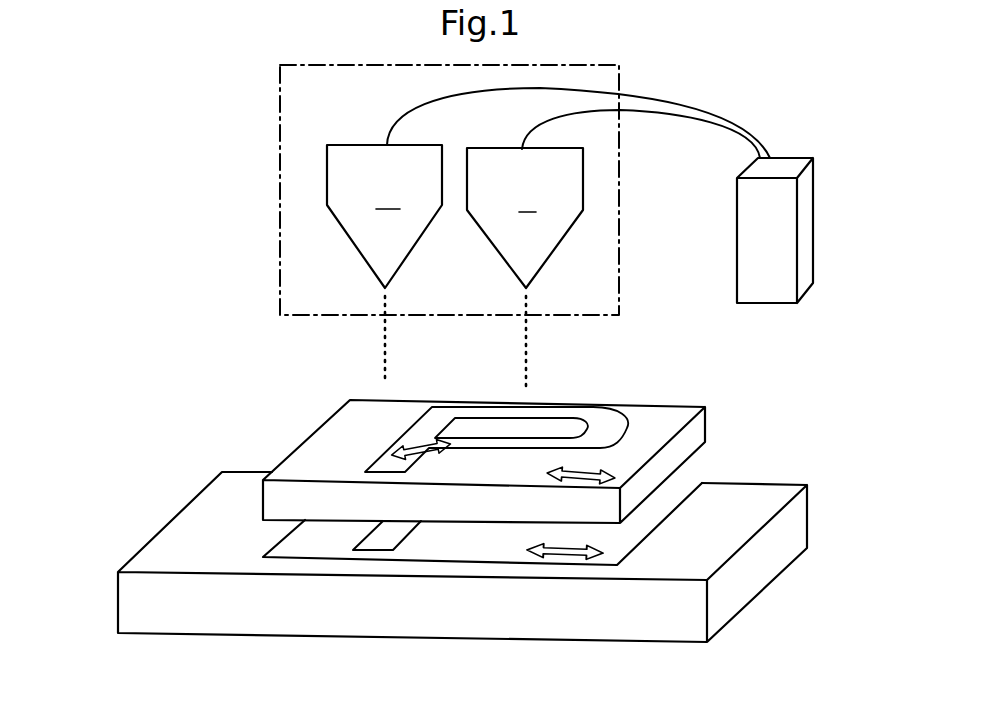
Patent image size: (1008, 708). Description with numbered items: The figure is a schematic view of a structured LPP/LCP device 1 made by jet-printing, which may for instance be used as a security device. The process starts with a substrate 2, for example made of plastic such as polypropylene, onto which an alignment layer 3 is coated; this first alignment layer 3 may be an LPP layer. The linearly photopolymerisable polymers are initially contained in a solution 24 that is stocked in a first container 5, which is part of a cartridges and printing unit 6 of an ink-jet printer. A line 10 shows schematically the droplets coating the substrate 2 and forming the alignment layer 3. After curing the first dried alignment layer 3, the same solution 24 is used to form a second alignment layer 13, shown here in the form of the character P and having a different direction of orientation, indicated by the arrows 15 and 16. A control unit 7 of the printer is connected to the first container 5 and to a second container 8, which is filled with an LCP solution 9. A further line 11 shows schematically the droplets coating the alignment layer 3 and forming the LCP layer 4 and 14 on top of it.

The structured LPP/LCP device 1 is at (230, 448).
The substrate 2 is at (798, 535).
The alignment layer 3 is at (668, 500).
The LCP layer 4 is at (687, 445).
The first container 5 is at (325, 182).
The cartridges and printing unit 6 is at (278, 70).
The control unit 7 is at (817, 232).
The second container 8 is at (585, 202).
The LCP solution 9 is at (527, 197).
The line of droplets 10 is at (380, 362).
The line of droplets 11 is at (530, 358).
The second alignment layer 13 is at (383, 535).
The LCP layer 14 is at (605, 428).
The arrow 15 is at (560, 558).
The arrow 16 is at (392, 454).
The solution 24 is at (388, 196).